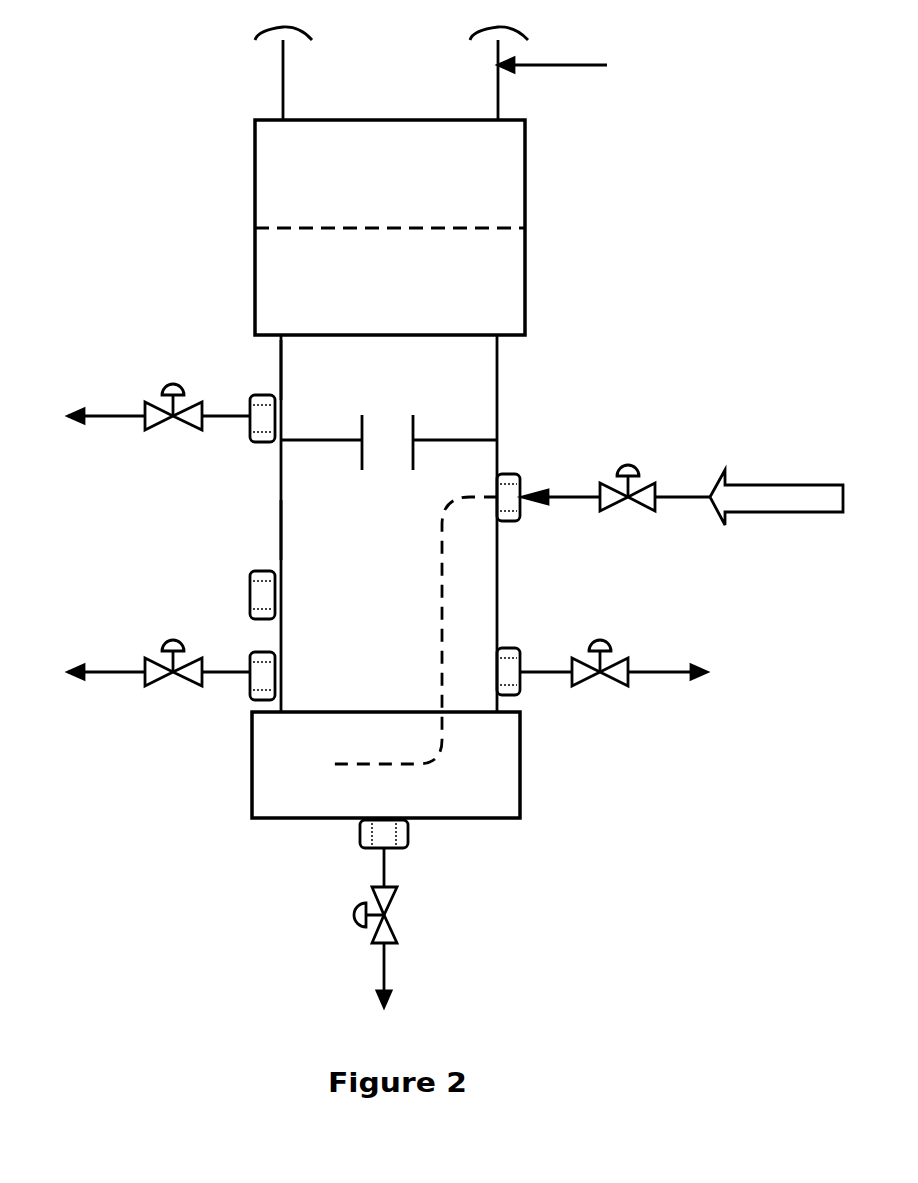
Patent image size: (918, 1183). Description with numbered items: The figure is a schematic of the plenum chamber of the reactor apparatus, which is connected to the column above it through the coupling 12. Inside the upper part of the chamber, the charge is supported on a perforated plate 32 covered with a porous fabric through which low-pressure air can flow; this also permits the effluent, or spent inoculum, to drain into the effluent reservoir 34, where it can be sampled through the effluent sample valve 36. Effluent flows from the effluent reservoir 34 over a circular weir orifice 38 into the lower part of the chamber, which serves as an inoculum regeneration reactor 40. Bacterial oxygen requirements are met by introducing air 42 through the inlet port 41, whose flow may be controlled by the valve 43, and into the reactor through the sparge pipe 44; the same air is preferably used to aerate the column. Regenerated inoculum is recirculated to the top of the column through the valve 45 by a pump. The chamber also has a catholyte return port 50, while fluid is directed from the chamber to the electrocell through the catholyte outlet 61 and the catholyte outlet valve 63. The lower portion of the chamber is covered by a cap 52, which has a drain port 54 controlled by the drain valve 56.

The coupling 12 is at (540, 202).
The perforated plate 32 is at (240, 228).
The effluent reservoir 34 is at (266, 363).
The effluent sample valve 36 is at (155, 418).
The circular weir orifice 38 is at (417, 402).
The inoculum regeneration reactor 40 is at (266, 523).
The inlet port 41 is at (530, 452).
The air 42 is at (777, 485).
The valve 43 is at (645, 488).
The sparge pipe 44 is at (445, 603).
The valve 45 is at (620, 664).
The catholyte return port 50 is at (236, 591).
The cap 52 is at (535, 795).
The drain port 54 is at (410, 834).
The drain valve 56 is at (388, 928).
The catholyte outlet 61 is at (258, 694).
The catholyte outlet valve 63 is at (150, 670).